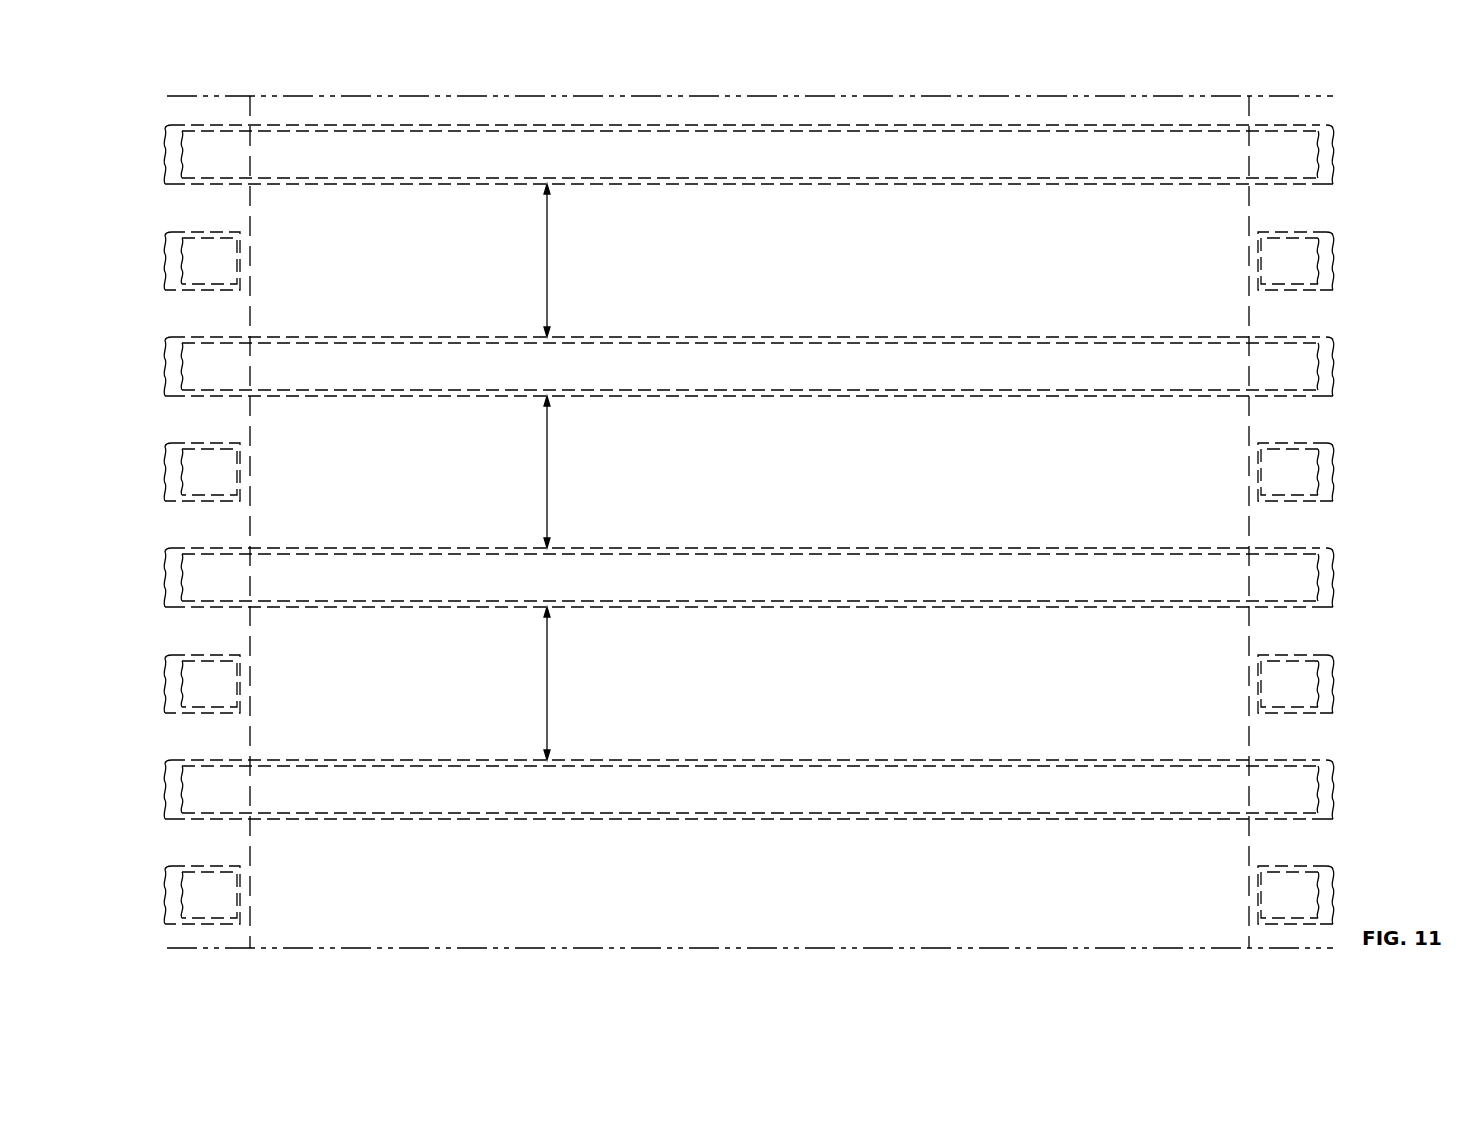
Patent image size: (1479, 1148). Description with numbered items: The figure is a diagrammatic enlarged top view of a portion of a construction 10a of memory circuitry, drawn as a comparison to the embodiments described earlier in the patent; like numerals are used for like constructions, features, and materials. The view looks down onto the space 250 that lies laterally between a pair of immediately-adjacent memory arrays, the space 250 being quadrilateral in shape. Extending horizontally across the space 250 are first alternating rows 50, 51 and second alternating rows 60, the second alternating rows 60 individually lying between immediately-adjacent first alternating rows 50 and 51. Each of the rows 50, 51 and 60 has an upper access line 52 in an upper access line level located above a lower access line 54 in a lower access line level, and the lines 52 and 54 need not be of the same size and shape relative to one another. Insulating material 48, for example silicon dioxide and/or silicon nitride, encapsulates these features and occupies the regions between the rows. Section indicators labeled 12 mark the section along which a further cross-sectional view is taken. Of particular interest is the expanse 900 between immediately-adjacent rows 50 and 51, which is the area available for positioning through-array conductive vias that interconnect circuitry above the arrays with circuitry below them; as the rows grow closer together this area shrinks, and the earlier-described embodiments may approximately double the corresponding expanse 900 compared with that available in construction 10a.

The construction 10a is at (1412, 106).
The section line 12- 12 is at (738, 522).
The insulating material 48 is at (390, 272).
The first alternating row 50 is at (160, 125).
The first alternating row 51 is at (160, 337).
The upper access line 52 is at (722, 123).
The lower access line 54 is at (950, 189).
The second alternating row 60 is at (160, 232).
The space 250 is at (865, 85).
The expanse 900 is at (549, 264).